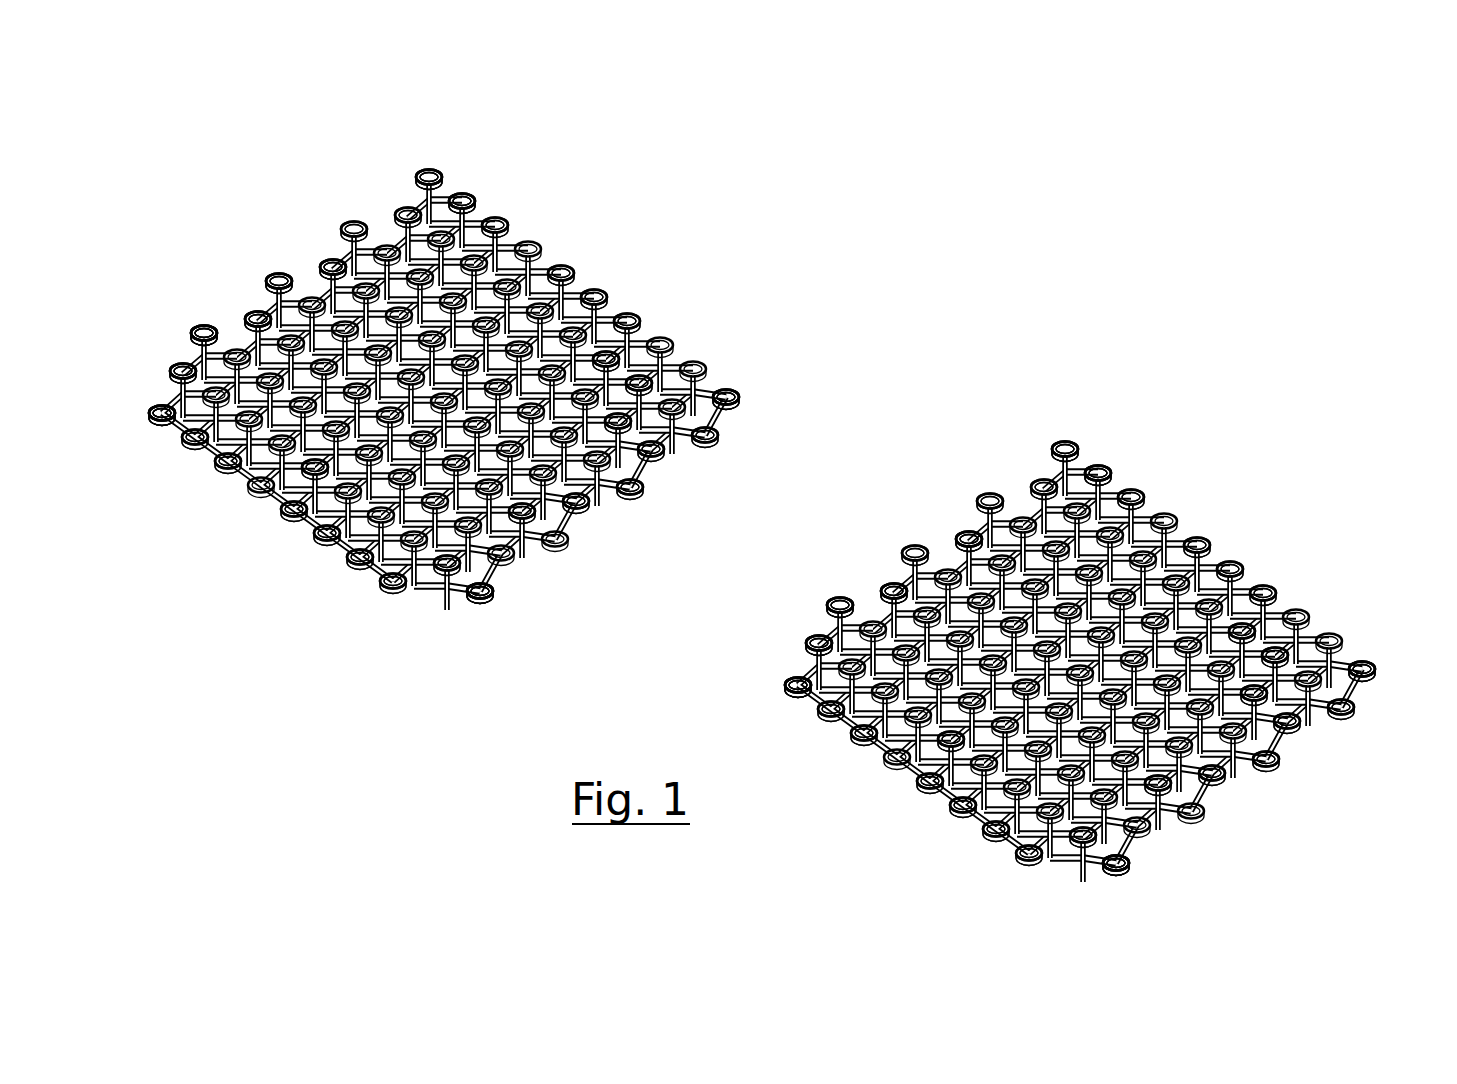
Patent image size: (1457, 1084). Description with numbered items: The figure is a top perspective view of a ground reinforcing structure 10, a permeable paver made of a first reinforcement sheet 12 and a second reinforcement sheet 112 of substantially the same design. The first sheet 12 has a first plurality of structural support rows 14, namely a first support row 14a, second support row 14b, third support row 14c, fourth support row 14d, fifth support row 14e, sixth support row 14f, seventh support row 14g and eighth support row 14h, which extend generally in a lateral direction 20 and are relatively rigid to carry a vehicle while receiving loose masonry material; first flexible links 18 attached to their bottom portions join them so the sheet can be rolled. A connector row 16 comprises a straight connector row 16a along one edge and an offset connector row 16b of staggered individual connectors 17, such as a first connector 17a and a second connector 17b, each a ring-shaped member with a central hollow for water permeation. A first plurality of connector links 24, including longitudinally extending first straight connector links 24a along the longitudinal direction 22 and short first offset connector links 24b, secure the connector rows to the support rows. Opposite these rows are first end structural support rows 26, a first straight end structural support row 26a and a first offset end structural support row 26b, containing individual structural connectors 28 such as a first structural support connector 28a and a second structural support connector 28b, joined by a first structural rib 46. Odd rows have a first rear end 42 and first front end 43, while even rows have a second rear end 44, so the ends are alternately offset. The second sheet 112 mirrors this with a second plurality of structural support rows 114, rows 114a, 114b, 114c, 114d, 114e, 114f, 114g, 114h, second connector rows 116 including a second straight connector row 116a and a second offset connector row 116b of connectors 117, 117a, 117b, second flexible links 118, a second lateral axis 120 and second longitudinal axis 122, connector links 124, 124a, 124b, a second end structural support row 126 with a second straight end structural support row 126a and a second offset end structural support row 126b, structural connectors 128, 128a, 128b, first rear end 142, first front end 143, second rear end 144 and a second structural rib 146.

The ground reinforcing structure 10 is at (600, 140).
The first reinforcement sheet 12 is at (255, 190).
The first plurality of structural support rows 14 is at (620, 525).
The first support row 14a is at (168, 360).
The second support row 14b is at (190, 328).
The third support row 14c is at (240, 310).
The fourth support row 14d is at (260, 260).
The fifth support row 14e is at (297, 246).
The sixth support row 14f is at (345, 211).
The seventh support row 14g is at (392, 200).
The eighth support row 14h is at (410, 162).
The connector row 16 is at (450, 606).
The straight connector row 16a is at (160, 406).
The offset connector row 16b is at (768, 372).
The individual connector 17 is at (218, 470).
The first connector 17a is at (156, 419).
The second connector 17b is at (297, 517).
The first flexible links 18 is at (500, 208).
The lateral axis 20 is at (615, 518).
The longitudinal axis 22 is at (620, 282).
The first plurality of connector links 24 is at (722, 415).
The first straight connector links 24a is at (172, 402).
The first offset connector links 24b is at (470, 610).
The first end structural support rows 26 is at (428, 163).
The first straight end structural support row 26a is at (737, 407).
The first offset end structural support row 26b is at (462, 163).
The individual structural connector 28 is at (585, 258).
The first structural support connector 28a is at (560, 225).
The second structural support connector 28b is at (640, 310).
The first rear end 42 is at (327, 257).
The first front end 43 is at (487, 575).
The second rear end 44 is at (268, 292).
The first structural rib 46 is at (590, 285).
The second reinforcement sheet 112 is at (898, 455).
The second plurality of structural support rows 114 is at (1290, 800).
The first support row 114a is at (805, 632).
The second support row 114b is at (827, 598).
The third support row 114c is at (876, 580).
The fourth support row 114d is at (897, 532).
The fifth support row 114e is at (935, 518).
The sixth support row 114f is at (982, 485).
The seventh support row 114g is at (1027, 472).
The eighth support row 114h is at (1045, 435).
The second connector rows 116 is at (1098, 878).
The second straight connector row 116a is at (796, 678).
The second offset connector row 116b is at (1380, 640).
The individual connector 117 is at (862, 735).
The first connector 117a is at (792, 688).
The second connector 117b is at (930, 790).
The second flexible links 118 is at (1138, 485).
The second lateral axis 120 is at (1250, 790).
The second longitudinal axis 122 is at (1258, 552).
The second plurality of connector links 124 is at (1340, 700).
The second straight connector links 124a is at (805, 670).
The second offset connector links 124b is at (1108, 880).
The second end structural support row 126 is at (1067, 425).
The second straight end structural support row 126a is at (1370, 683).
The second offset end structural support row 126b is at (1125, 437).
The individual structural connector 128 is at (1222, 528).
The first structural support connector 128a is at (1200, 495).
The second structural support connector 128b is at (1275, 580).
The first rear end 142 is at (945, 518).
The first front end 143 is at (1124, 848).
The second rear end 144 is at (905, 565).
The second structural rib 146 is at (1225, 555).